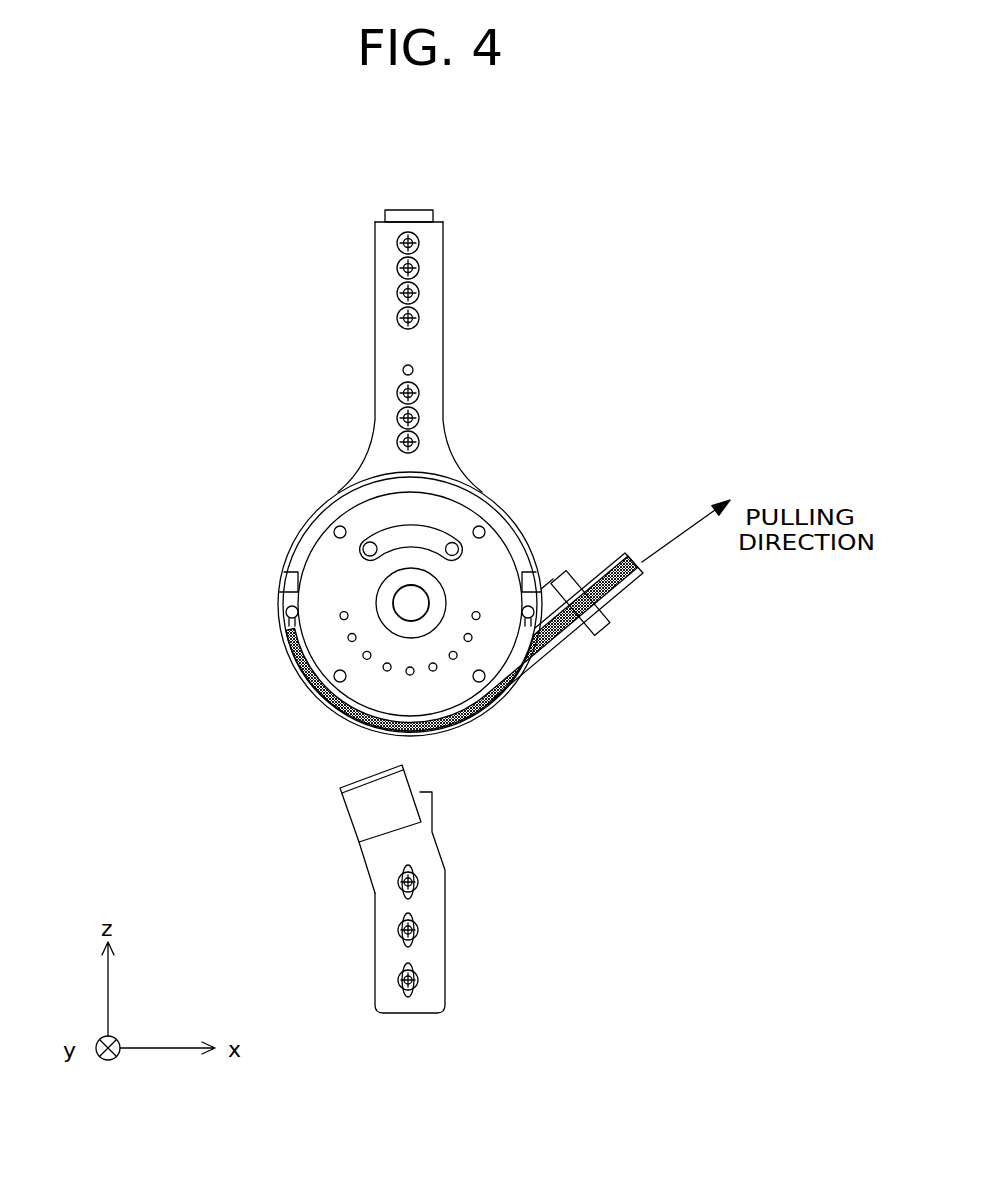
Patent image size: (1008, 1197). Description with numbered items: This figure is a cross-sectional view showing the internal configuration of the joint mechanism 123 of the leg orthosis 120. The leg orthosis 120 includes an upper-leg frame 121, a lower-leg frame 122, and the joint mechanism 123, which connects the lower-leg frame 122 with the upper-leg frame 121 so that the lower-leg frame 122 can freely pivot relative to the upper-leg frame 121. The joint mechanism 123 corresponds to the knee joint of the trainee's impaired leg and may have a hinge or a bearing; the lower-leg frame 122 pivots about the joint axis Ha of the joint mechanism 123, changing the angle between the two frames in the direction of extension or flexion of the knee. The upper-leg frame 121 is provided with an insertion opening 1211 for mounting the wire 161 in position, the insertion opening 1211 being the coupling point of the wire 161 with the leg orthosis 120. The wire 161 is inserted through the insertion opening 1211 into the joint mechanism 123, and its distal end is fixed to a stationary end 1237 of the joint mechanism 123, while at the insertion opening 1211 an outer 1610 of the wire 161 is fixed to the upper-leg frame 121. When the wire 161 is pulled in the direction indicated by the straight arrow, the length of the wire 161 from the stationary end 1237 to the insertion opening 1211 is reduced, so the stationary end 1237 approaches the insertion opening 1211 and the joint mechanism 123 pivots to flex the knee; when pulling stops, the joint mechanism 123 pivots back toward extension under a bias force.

The leg orthosis 120 is at (95, 201).
The upper-leg frame 121 is at (430, 338).
The lower-leg frame 122 is at (432, 958).
The joint mechanism 123 is at (415, 680).
The wire 161 is at (298, 675).
The insertion opening 1211 is at (594, 640).
The stationary end 1237 is at (282, 618).
The outer 1610 is at (627, 588).
The joint axis Ha is at (412, 603).